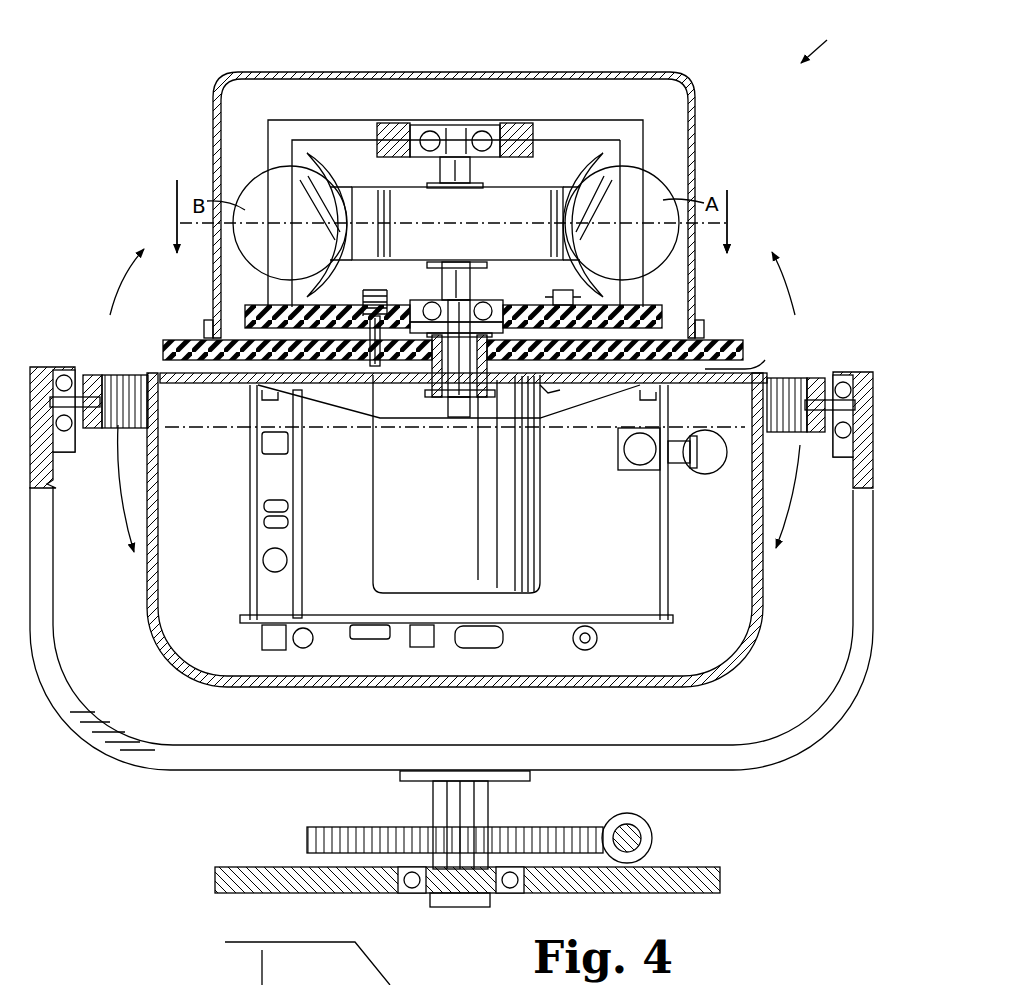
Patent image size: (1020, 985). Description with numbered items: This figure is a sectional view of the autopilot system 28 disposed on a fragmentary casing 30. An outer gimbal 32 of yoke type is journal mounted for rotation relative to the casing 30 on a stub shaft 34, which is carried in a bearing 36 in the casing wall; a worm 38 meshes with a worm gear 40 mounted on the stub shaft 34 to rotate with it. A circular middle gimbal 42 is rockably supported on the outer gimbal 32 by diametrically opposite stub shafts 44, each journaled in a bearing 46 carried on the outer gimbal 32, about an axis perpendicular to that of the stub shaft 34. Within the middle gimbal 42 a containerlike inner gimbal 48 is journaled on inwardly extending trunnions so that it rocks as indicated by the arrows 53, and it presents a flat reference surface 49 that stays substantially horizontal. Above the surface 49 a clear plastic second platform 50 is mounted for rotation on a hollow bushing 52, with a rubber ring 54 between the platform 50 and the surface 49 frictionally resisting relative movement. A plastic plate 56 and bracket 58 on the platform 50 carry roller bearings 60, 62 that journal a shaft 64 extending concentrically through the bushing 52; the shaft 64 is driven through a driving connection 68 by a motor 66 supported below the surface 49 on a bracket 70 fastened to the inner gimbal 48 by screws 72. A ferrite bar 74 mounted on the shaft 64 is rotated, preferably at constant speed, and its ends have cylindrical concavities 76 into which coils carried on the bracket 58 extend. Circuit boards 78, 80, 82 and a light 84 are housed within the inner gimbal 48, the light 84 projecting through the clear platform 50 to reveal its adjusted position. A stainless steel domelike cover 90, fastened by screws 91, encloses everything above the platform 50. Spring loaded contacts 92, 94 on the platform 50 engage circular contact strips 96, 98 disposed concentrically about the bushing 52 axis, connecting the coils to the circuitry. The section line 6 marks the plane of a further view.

The autopilot system 28 is at (828, 39).
The casing 30 is at (712, 865).
The outer gimbal 32 is at (730, 763).
The stub shaft 34 is at (440, 800).
The bearing 36 is at (407, 898).
The worm 38 is at (652, 838).
The worm gear 40 is at (538, 827).
The middle gimbal 42 is at (793, 390).
The stub shafts 44 is at (85, 428).
The bearing 46 is at (80, 366).
The inner gimbal 48 is at (162, 645).
The reference surface 49 is at (717, 371).
The second platform 50 is at (731, 341).
The bushing 52 is at (490, 392).
The arrows 53 is at (121, 302).
The rubber ring 54 is at (272, 330).
The plate 56 is at (652, 314).
The bracket 58 is at (563, 128).
The roller bearing 60 is at (481, 292).
The roller bearing 62 is at (487, 120).
The shaft 64 is at (452, 278).
The motor 66 is at (507, 530).
The driving connection 68 is at (465, 427).
The bracket 70 is at (337, 412).
The screws 72 is at (262, 412).
The ferrite bar 74 is at (515, 192).
The cylindrical concavities 76 is at (298, 187).
The circuit board 78 is at (667, 517).
The circuit board 80 is at (602, 615).
The circuit board 82 is at (301, 551).
The light 84 is at (708, 476).
The domelike cover 90 is at (368, 72).
The screws 91 is at (210, 324).
The spring loaded contact 92 is at (387, 283).
The spring loaded contact 94 is at (560, 284).
The contact strip 96 is at (377, 368).
The contact strip 98 is at (587, 377).
The section line 6- 6 is at (450, 198).